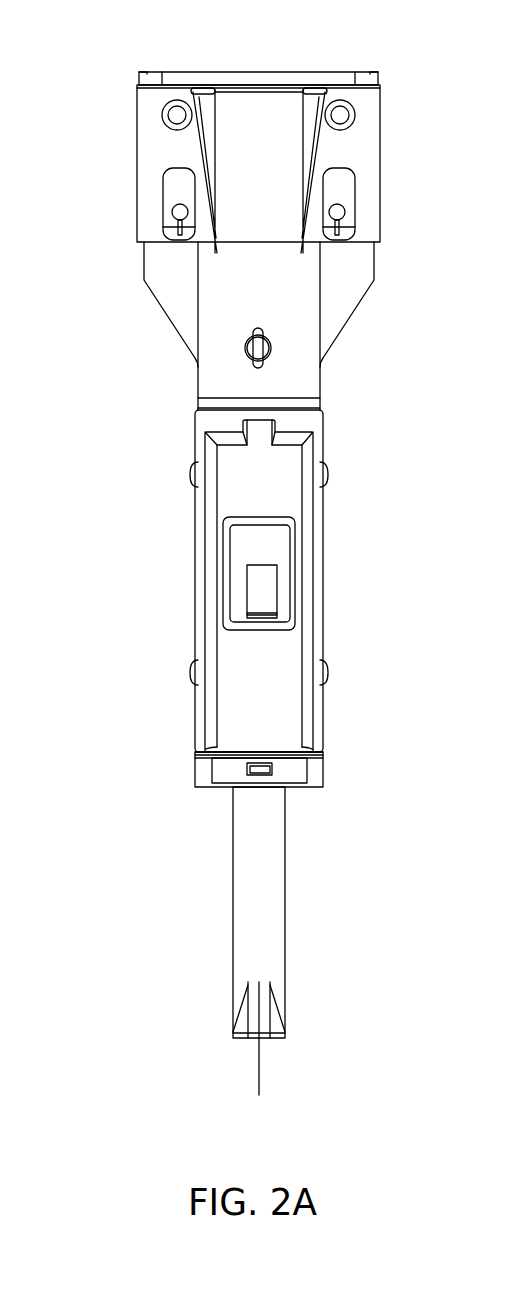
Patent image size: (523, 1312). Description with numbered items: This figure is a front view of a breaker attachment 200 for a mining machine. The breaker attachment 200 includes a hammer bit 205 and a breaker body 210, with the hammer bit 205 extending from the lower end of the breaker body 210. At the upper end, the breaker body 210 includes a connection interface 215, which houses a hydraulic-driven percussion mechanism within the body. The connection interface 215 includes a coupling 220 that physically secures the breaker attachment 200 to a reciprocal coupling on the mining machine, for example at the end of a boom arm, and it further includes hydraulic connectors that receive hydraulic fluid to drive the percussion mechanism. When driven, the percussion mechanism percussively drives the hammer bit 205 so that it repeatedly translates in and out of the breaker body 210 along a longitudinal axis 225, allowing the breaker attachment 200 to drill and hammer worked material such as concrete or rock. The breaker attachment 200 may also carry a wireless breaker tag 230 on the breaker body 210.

The breaker attachment 200 is at (110, 421).
The hammer bit 205 is at (233, 1010).
The breaker body 210 is at (195, 630).
The connection interface 215 is at (112, 80).
The coupling 220 is at (258, 70).
The longitudinal axis 225 is at (258, 1073).
The wireless breaker tag 230 is at (247, 592).